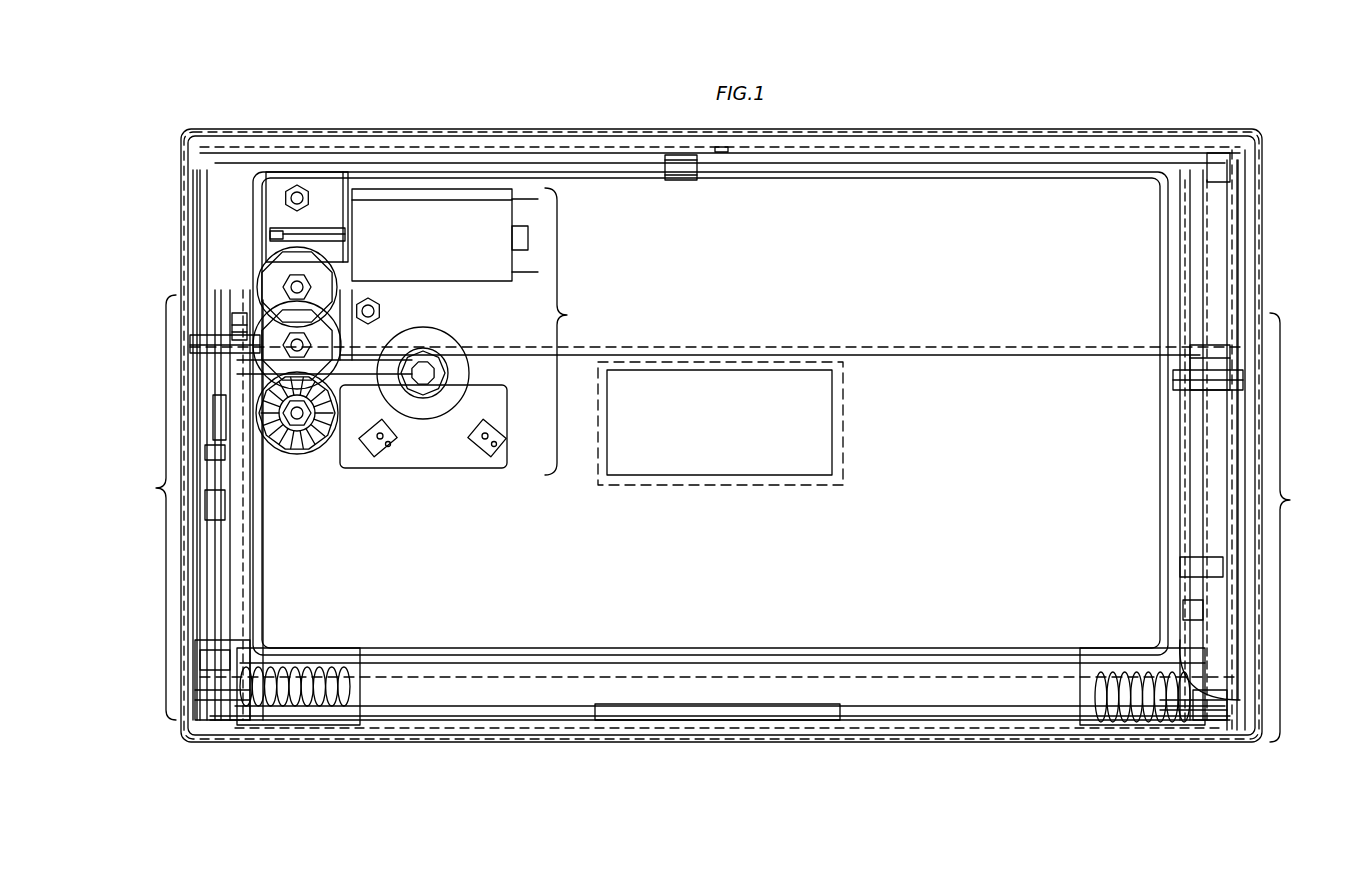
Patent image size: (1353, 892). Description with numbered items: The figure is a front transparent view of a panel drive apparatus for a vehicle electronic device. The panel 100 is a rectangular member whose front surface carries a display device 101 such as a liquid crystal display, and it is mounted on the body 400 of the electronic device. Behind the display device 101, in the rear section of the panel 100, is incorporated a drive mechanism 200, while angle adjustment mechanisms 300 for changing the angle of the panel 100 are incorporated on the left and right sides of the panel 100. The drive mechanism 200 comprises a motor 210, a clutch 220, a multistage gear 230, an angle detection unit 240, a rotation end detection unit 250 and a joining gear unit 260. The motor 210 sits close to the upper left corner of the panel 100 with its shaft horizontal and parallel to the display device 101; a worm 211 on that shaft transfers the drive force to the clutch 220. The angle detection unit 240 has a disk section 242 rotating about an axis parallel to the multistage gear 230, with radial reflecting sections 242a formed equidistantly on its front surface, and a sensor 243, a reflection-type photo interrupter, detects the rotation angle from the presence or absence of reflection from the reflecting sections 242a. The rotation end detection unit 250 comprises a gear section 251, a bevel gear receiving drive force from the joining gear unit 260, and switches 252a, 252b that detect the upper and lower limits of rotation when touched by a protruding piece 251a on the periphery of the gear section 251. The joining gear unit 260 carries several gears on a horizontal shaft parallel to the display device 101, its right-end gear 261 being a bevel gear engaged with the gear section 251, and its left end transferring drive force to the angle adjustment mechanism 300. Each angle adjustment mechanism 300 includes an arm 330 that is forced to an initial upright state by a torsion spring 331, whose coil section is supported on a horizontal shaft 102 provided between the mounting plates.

The panel 100 is at (1165, 165).
The display device 101 is at (1041, 183).
The horizontal shaft 102 is at (440, 692).
The drive mechanism 200 is at (579, 331).
The motor 210 is at (400, 217).
The worm 211 is at (316, 227).
The clutch 220 is at (245, 250).
The multistage gear 230 is at (240, 305).
The angle detection unit 240 is at (313, 520).
The disk section 242 is at (322, 462).
The reflecting sections 242a is at (287, 452).
The sensor 243 is at (343, 452).
The rotation end detection unit 250 is at (435, 520).
The gear section 251 is at (443, 340).
The protruding piece 251a is at (467, 392).
The switch 252a is at (378, 453).
The switch 252b is at (475, 453).
The joining gear unit 260 is at (357, 362).
The right-end gear 261 is at (404, 350).
The angle adjustment mechanism 300 is at (723, 447).
The arm 330 is at (200, 660).
The torsion spring 331 is at (287, 693).
The body 400 is at (1210, 130).